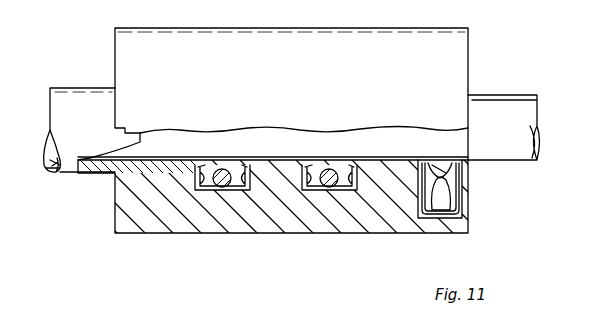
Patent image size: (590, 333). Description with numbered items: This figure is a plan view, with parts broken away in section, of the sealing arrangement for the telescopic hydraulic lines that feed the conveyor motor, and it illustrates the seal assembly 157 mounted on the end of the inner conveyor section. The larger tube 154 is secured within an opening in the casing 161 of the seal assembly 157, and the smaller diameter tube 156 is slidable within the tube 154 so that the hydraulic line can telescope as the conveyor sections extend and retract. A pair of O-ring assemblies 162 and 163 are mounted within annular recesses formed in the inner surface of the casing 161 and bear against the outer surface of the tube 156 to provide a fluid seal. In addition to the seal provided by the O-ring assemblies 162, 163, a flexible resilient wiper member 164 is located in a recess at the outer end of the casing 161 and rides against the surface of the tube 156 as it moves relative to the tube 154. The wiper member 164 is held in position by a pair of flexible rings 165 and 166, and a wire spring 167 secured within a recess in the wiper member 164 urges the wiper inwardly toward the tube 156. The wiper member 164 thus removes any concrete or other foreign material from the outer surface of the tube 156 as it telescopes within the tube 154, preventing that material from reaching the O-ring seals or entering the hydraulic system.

The tube 154 is at (60, 88).
The smaller diameter tube 156 is at (532, 78).
The seal assembly 157 is at (314, 14).
The casing 161 is at (125, 199).
The O-ring assembly 162 is at (225, 165).
The O-ring assembly 163 is at (335, 165).
The wiper member 164 is at (443, 165).
The flexible ring 165 is at (420, 178).
The flexible ring 166 is at (463, 198).
The wire spring 167 is at (440, 168).